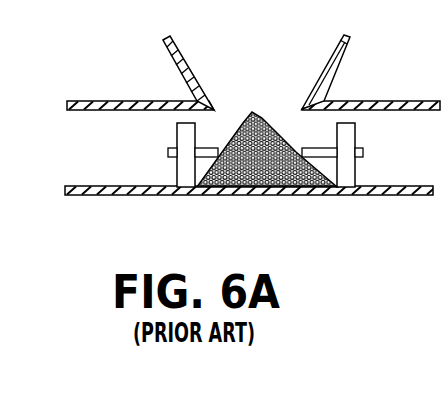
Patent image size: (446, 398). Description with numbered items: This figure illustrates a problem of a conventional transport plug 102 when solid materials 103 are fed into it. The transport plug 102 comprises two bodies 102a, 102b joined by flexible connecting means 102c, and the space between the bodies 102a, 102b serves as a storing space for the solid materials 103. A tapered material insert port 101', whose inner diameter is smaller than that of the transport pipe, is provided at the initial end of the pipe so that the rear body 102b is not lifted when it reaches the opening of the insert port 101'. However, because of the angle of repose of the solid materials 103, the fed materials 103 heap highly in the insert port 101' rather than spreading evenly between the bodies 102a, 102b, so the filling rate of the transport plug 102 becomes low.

The tapered material insert port 101' is at (168, 73).
The solid materials 103 is at (280, 137).
The transport plug 102 is at (246, 192).
The body 102a is at (350, 180).
The rear body 102b is at (185, 174).
The flexible connecting means 102c is at (206, 148).